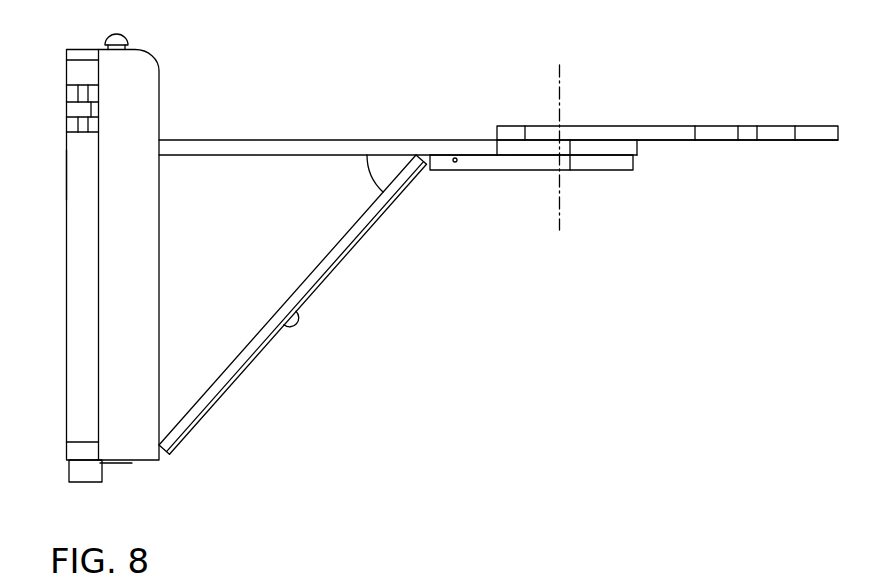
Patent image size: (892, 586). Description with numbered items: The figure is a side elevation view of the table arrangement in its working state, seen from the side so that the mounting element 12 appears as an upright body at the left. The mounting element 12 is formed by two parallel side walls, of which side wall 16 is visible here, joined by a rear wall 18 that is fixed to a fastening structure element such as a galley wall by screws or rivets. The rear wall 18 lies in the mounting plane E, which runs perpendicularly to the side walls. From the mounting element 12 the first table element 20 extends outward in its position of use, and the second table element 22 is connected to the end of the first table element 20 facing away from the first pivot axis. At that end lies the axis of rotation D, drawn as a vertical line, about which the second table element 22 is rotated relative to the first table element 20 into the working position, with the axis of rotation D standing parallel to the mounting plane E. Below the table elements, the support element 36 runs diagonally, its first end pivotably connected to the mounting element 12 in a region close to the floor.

The mounting element 12 is at (73, 263).
The mounting plane E is at (65, 176).
The side wall 16 is at (153, 60).
The rear wall 18 is at (65, 362).
The first table element 20 is at (395, 201).
The second table element 22 is at (673, 142).
The support element 36 is at (265, 351).
The axis of rotation D is at (560, 83).